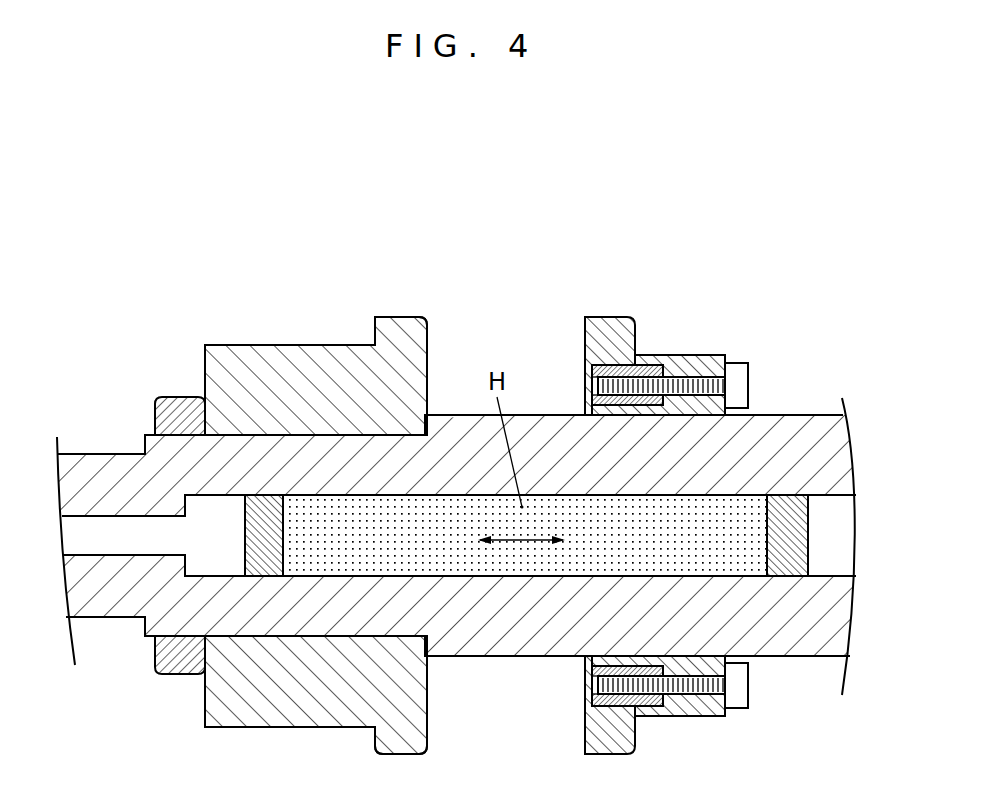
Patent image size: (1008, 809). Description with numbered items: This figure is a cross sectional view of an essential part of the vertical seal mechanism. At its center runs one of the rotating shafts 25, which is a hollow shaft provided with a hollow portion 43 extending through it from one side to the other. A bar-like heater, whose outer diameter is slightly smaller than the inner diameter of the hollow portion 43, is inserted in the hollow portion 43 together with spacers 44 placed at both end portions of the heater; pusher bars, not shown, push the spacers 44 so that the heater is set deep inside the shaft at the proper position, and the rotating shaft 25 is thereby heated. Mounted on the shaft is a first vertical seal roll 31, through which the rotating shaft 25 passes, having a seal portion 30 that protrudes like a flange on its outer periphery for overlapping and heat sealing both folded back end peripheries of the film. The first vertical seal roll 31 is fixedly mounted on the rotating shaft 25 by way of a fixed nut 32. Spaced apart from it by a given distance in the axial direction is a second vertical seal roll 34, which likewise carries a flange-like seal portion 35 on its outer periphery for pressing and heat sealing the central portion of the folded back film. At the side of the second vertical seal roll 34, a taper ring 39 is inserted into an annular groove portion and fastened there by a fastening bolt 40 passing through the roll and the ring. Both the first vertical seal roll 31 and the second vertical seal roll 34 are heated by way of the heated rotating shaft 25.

The rotating shaft 25 is at (797, 425).
The seal portion 30 is at (400, 317).
The first vertical seal roll 31 is at (312, 352).
The fixed nut 32 is at (167, 404).
The second vertical seal roll 34 is at (657, 357).
The seal portion 35 is at (597, 317).
The taper ring 39 is at (590, 668).
The fastening bolt 40 is at (738, 683).
The hollow portion 43 is at (833, 530).
The spacer 44 is at (256, 538).